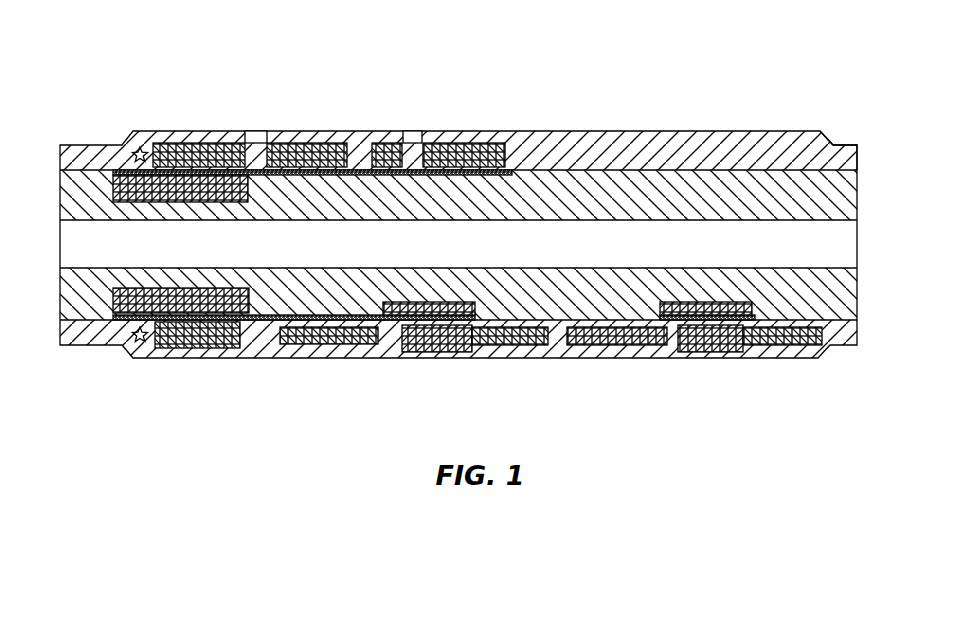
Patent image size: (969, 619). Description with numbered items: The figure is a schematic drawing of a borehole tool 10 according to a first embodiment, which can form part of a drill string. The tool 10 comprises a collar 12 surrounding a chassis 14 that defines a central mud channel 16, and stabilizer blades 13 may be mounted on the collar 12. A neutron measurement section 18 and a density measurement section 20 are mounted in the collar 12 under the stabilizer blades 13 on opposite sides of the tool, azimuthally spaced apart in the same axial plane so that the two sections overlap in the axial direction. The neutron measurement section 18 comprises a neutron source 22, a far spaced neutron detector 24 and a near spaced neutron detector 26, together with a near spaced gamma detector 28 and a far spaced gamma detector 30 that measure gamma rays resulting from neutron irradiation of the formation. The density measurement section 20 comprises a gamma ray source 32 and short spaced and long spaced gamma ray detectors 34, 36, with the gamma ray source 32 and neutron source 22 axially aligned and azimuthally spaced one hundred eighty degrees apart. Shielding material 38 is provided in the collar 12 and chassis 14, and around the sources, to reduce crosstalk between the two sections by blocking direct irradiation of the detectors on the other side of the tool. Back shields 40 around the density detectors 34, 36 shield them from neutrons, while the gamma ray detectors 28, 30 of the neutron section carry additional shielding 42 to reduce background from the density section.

The tool 10 is at (653, 85).
The collar 12 is at (848, 143).
The stabilizer blades 13 is at (580, 125).
The chassis 14 is at (715, 190).
The mud channel 16 is at (632, 235).
The neutron measurement section 18 is at (512, 372).
The density measurement section 20 is at (321, 100).
The neutron source 22 is at (140, 345).
The far spaced neutron detector 24 is at (612, 352).
The near spaced neutron detector 26 is at (348, 350).
The near spaced gamma detector 28 is at (440, 352).
The far spaced gamma detector 30 is at (712, 360).
The gamma ray source 32 is at (138, 148).
The short spaced gamma ray detector 34 is at (290, 143).
The long spaced gamma ray detector 36 is at (445, 140).
The shielding material 38 is at (122, 170).
The back shields 40 is at (355, 165).
The additional shielding 42 is at (417, 318).